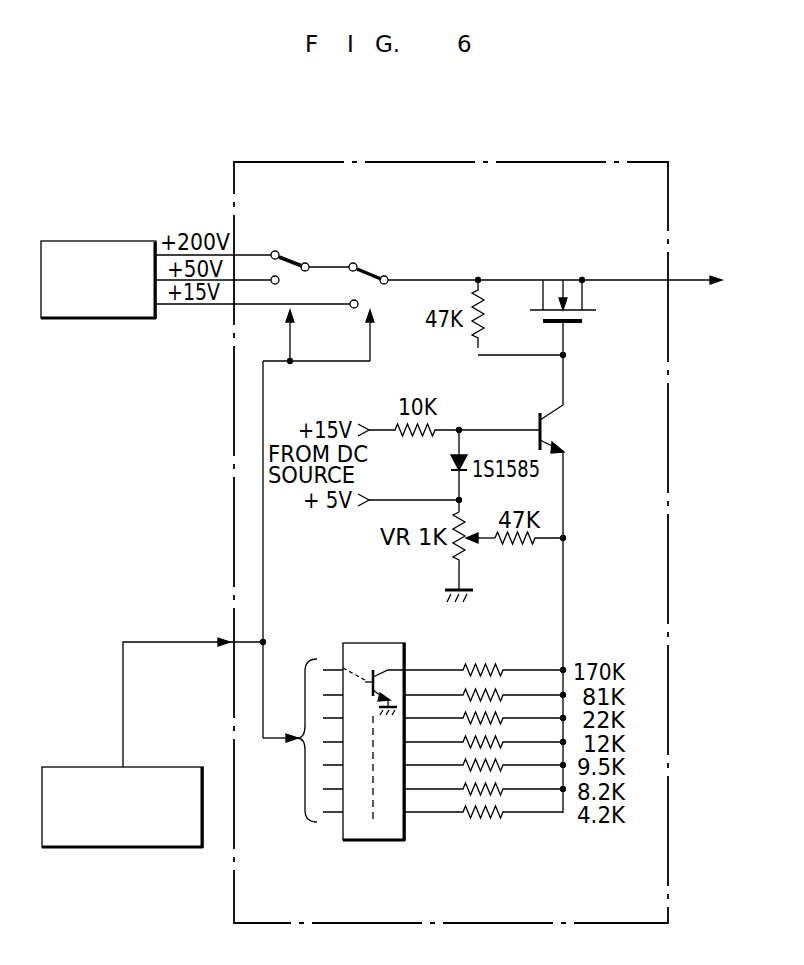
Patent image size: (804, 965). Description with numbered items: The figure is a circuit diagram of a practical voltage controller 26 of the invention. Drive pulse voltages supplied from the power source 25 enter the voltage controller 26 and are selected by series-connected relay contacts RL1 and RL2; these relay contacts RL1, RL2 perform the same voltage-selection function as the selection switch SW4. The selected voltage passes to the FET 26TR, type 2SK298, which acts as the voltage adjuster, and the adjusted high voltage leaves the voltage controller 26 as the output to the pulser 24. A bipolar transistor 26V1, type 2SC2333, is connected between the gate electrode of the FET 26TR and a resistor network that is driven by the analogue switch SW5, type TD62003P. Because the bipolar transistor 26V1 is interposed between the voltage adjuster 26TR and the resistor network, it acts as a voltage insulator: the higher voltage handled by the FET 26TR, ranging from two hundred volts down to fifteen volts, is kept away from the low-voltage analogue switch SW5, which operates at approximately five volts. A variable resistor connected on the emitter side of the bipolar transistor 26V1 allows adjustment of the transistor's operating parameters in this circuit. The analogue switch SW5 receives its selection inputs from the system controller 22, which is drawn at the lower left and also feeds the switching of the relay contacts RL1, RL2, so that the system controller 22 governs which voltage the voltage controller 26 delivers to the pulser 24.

The system controller 22 is at (172, 838).
The pulser 24 is at (717, 305).
The power source 25 is at (88, 246).
The voltage controller 26 is at (624, 161).
The FET 26TR is at (590, 313).
The bipolar transistor 26V1 is at (563, 423).
The relay contact RL1 is at (288, 255).
The relay contact RL2 is at (370, 268).
The selection switch SW4 is at (331, 312).
The analogue switch SW5 is at (363, 845).